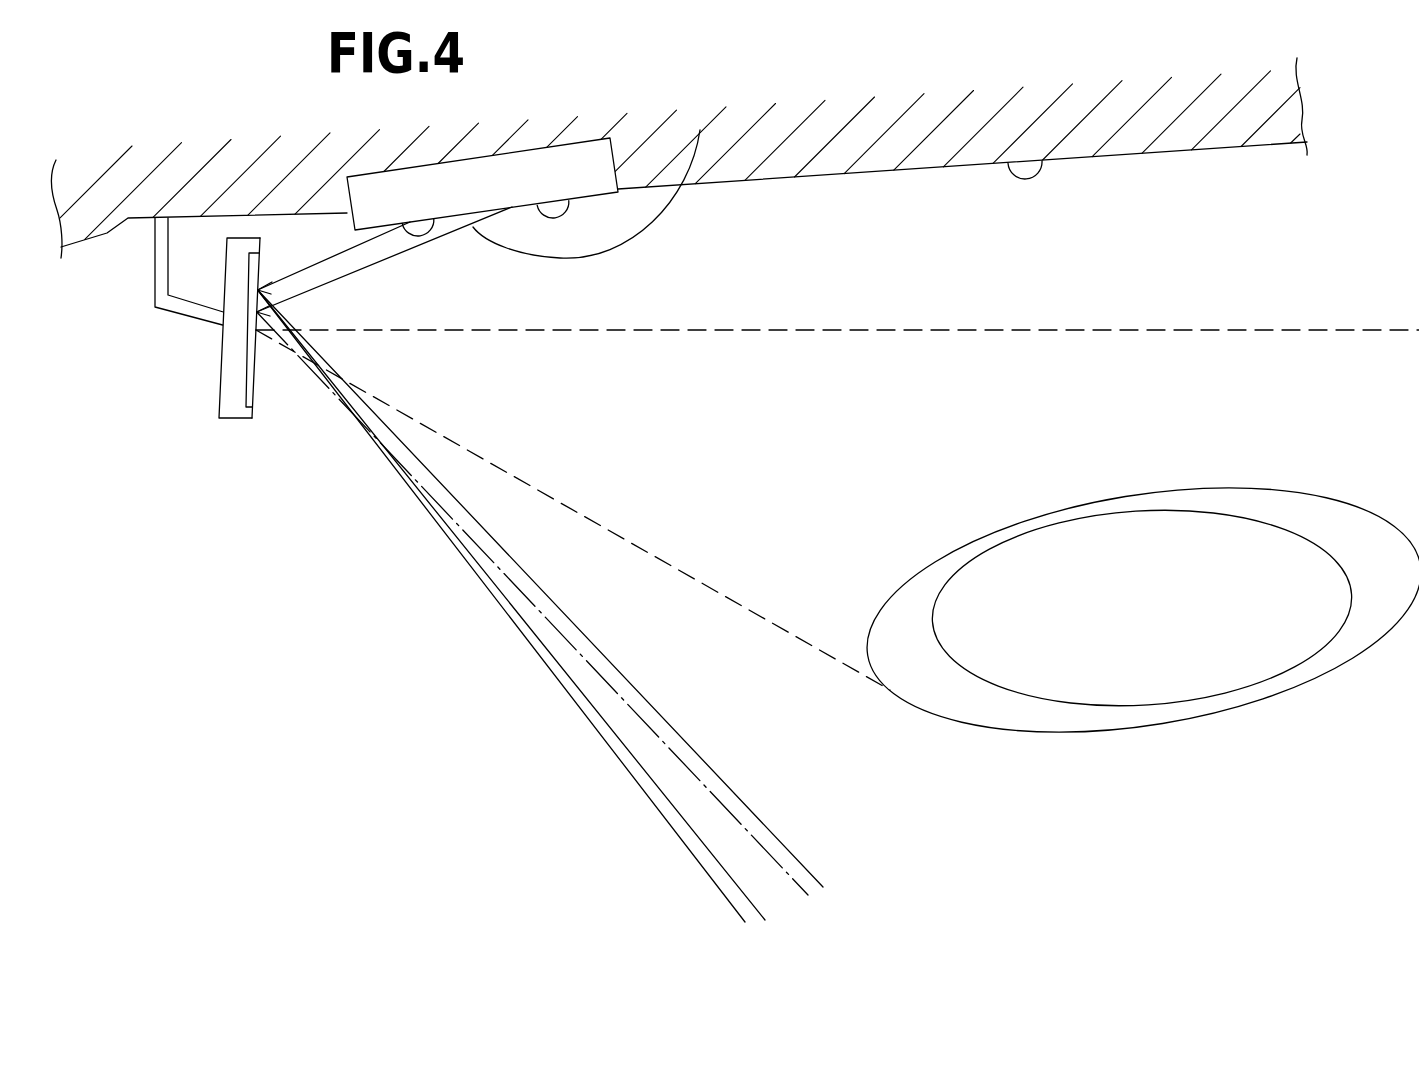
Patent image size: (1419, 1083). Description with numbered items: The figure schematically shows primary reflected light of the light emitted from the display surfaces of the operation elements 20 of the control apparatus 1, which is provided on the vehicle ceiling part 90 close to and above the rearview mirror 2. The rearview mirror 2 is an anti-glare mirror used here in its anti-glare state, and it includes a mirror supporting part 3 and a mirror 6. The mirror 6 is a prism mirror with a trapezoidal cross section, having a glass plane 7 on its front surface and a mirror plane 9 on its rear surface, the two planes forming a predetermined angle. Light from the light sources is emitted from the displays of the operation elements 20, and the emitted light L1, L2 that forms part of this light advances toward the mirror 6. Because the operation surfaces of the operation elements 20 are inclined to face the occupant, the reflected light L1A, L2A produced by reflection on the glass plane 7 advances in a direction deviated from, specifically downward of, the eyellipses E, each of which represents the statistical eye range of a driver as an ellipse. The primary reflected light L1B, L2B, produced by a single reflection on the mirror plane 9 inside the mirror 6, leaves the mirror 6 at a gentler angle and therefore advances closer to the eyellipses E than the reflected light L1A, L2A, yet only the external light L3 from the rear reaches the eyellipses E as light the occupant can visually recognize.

The control apparatus 1 is at (630, 135).
The rearview mirror 2 is at (218, 238).
The mirror supporting part 3 is at (157, 250).
The mirror 6 is at (247, 360).
The glass plane 7 is at (269, 259).
The mirror plane 9 is at (245, 247).
The operation element 20 is at (417, 221).
The vehicle ceiling part 90 is at (1038, 162).
The emitted light L1 is at (298, 272).
The emitted light L2 is at (700, 130).
The external light L3 is at (1316, 325).
The reflected light L1A is at (420, 497).
The primary reflected light L1B is at (563, 613).
The reflected light L2A is at (478, 582).
The primary reflected light L2B is at (612, 690).
The eyellipse E is at (1357, 657).